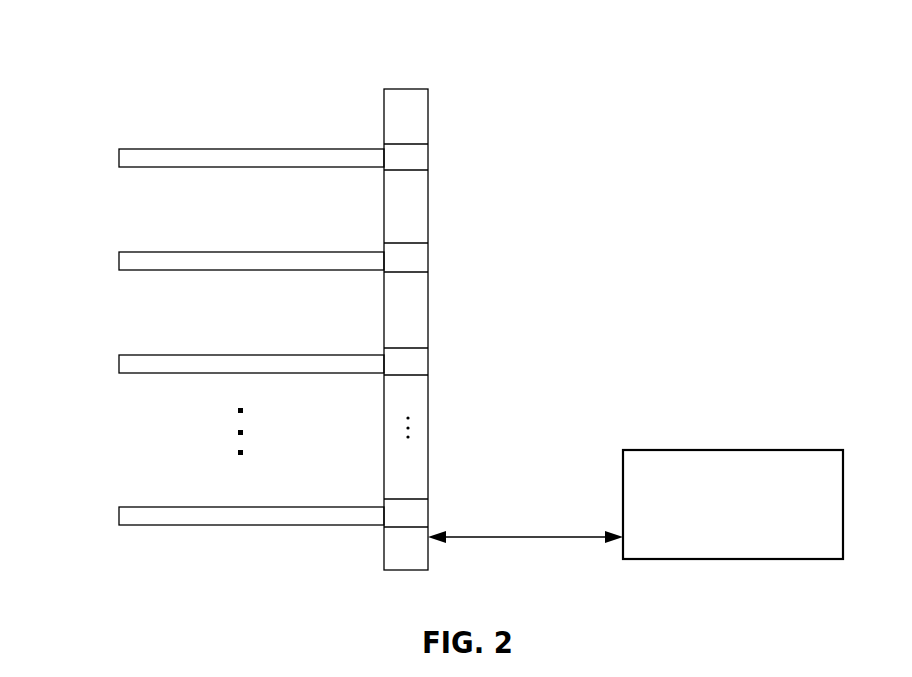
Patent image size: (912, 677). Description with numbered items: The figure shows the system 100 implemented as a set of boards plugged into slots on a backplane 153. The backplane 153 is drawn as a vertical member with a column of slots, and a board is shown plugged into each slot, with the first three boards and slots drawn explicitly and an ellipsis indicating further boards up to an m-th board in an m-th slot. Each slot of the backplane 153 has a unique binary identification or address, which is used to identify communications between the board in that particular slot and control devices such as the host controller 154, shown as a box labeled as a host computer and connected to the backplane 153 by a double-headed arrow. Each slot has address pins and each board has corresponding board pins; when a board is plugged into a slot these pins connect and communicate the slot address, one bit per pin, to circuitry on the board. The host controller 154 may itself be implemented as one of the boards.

The system 100 is at (166, 85).
The backplane 153 is at (384, 117).
The host controller 154 is at (717, 450).